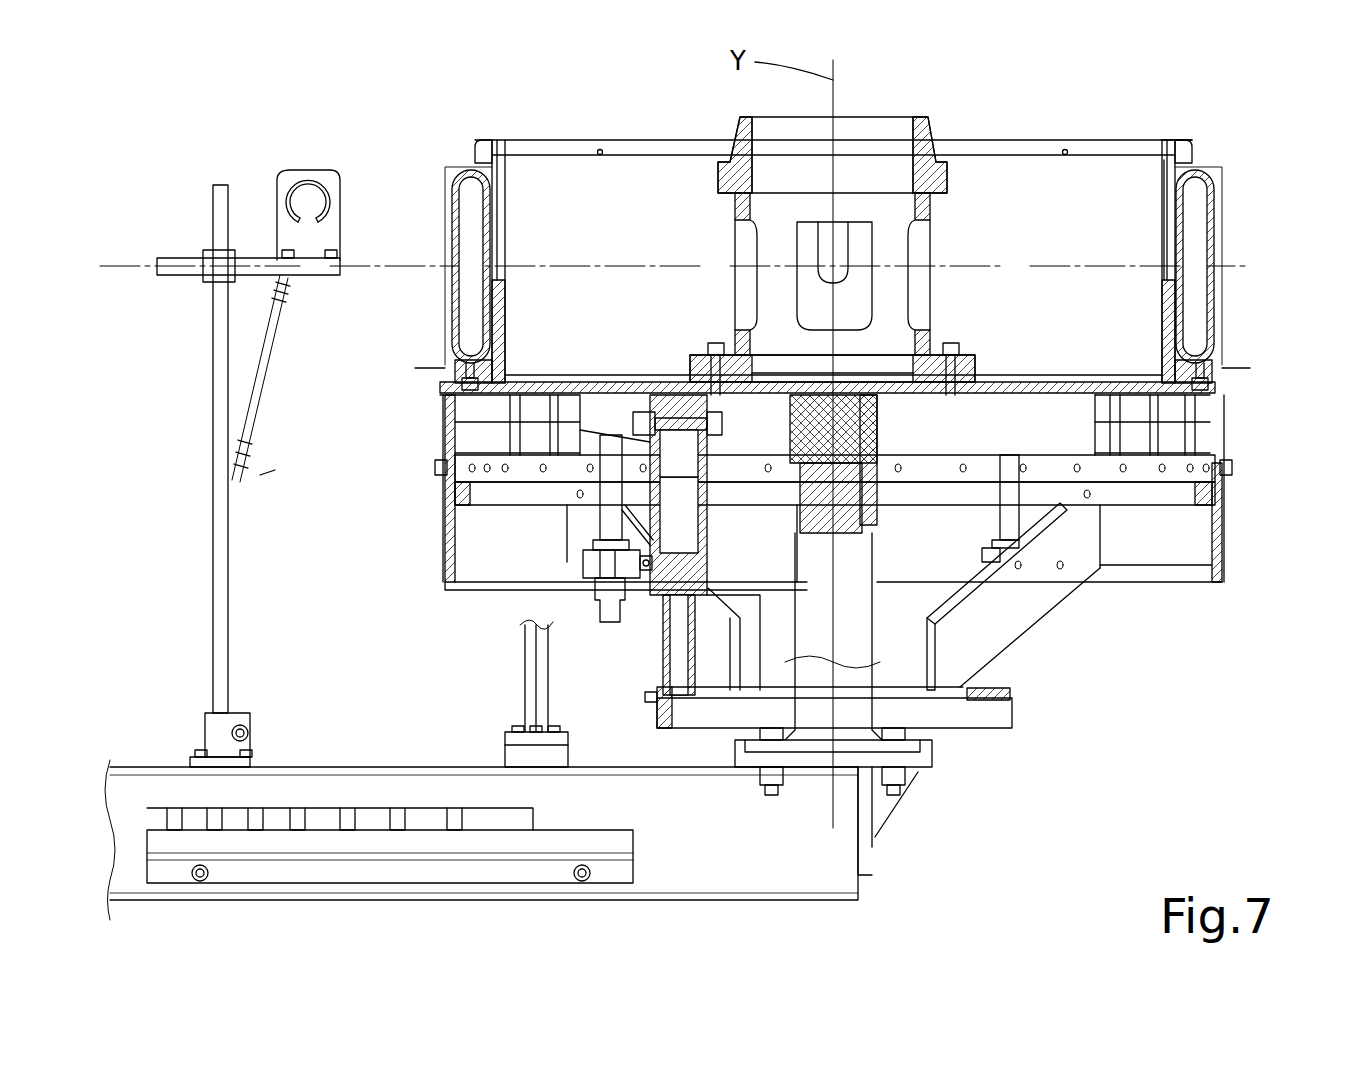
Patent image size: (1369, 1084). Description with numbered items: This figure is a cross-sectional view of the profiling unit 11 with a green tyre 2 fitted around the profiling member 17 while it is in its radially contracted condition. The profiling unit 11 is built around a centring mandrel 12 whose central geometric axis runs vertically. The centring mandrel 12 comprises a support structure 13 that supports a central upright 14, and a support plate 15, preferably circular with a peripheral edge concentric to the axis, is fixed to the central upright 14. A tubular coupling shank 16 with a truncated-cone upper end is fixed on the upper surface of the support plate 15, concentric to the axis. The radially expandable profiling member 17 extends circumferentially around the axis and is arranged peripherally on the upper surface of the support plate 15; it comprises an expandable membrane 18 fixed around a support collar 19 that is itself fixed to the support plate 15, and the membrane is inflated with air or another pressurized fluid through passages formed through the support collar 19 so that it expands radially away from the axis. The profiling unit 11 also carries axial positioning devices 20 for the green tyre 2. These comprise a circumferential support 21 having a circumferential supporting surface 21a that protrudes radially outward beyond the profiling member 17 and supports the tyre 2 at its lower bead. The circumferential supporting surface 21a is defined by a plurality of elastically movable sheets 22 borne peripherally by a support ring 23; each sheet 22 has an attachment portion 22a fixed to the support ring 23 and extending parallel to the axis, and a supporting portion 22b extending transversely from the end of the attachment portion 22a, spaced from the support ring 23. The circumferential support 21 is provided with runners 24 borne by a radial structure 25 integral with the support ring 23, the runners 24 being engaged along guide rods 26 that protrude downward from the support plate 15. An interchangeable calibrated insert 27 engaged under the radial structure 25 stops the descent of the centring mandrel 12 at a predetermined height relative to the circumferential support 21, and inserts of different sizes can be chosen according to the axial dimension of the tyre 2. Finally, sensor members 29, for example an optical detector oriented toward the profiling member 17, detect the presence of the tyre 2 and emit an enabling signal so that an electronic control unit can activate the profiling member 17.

The green tyre 2 is at (1226, 210).
The profiling unit 11 is at (455, 127).
The centring mandrel 12 is at (968, 345).
The support structure 13 is at (150, 757).
The central upright 14 is at (848, 640).
The support plate 15 is at (1090, 378).
The coupling shank 16 is at (925, 140).
The profiling member 17 is at (1178, 132).
The expandable membrane 18 is at (1208, 195).
The support collar 19 is at (1165, 175).
The axial positioning devices 20 is at (518, 675).
The circumferential support 21 is at (1228, 490).
The circumferential supporting surface 21a is at (1250, 368).
The elastically movable sheets 22 is at (440, 417).
The attachment portion 22a is at (438, 390).
The supporting portion 22b is at (420, 368).
The support ring 23 is at (1185, 580).
The runners 24 is at (595, 564).
The radial structure 25 is at (1000, 612).
The guide rods 26 is at (1008, 513).
The calibrated insert 27 is at (275, 822).
The sensor members 29 is at (310, 180).